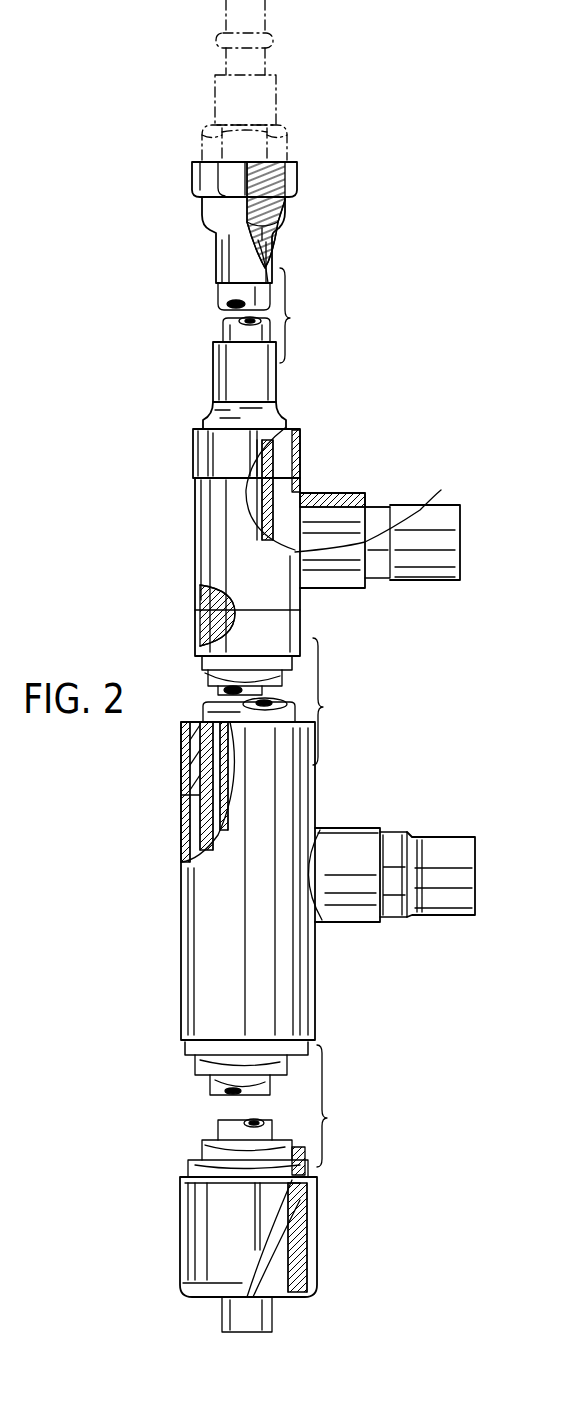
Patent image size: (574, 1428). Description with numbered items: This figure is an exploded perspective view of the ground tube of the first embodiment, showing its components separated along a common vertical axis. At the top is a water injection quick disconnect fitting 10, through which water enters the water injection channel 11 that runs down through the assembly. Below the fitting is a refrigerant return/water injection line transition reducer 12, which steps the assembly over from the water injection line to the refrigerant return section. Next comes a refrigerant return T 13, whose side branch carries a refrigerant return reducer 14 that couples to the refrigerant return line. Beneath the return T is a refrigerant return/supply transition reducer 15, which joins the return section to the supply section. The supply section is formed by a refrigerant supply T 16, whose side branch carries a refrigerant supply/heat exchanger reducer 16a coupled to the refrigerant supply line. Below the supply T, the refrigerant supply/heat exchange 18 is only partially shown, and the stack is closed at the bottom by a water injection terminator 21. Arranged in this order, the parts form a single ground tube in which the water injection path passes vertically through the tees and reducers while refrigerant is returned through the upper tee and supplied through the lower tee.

The water injection quick disconnect fitting 10 is at (300, 172).
The water injection channel 11 is at (287, 320).
The refrigerant return/water injection line transition reducer 12 is at (285, 412).
The refrigerant return T 13 is at (305, 490).
The refrigerant return reducer 14 is at (441, 490).
The refrigerant return/supply transition reducer 15 is at (302, 628).
The refrigerant supply T 16 is at (320, 997).
The refrigerant supply/heat exchanger reducer 16a is at (405, 830).
The refrigerant supply/heat exchange 18 is at (328, 1118).
The water injection terminator 21 is at (275, 1322).